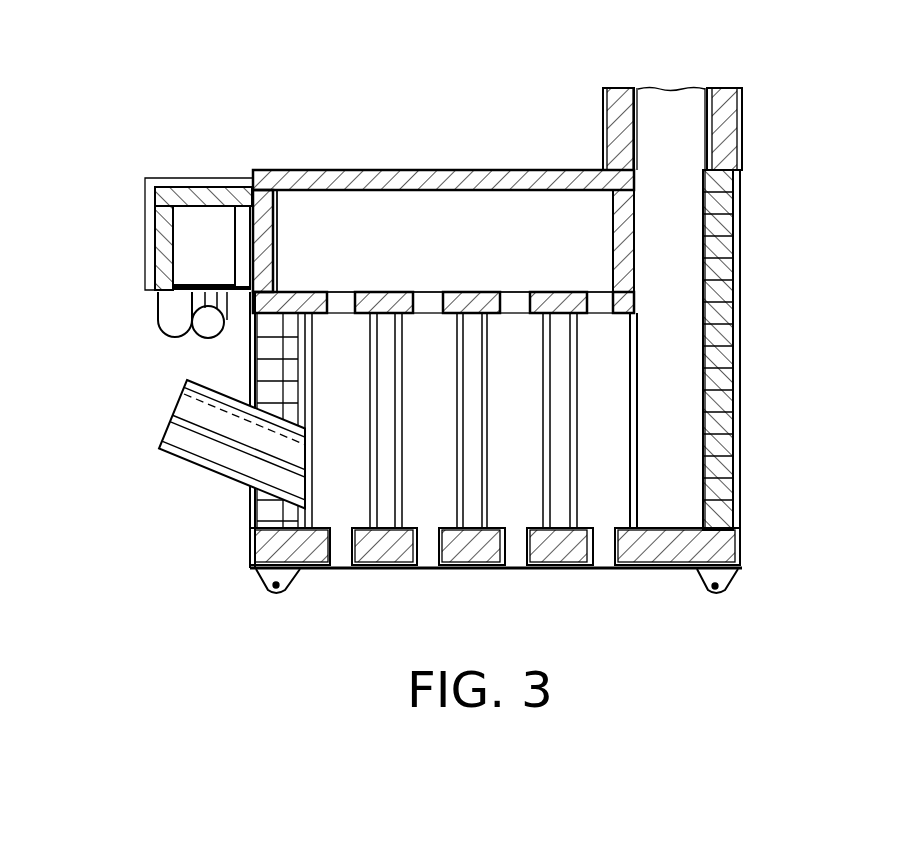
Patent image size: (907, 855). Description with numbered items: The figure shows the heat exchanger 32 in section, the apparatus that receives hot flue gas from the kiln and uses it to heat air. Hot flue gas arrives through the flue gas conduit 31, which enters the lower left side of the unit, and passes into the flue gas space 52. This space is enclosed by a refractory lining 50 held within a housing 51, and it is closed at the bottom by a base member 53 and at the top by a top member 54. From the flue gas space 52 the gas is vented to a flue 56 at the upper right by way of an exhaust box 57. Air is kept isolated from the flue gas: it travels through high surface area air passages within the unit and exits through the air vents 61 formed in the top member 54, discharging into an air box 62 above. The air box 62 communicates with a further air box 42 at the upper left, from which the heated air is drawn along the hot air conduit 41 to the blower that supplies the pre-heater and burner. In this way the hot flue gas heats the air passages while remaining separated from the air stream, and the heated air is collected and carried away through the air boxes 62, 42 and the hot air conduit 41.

The flue gas conduit 31 is at (188, 460).
The heat exchanger 32 is at (443, 119).
The hot air conduit 41 is at (168, 300).
The air box 42 is at (198, 227).
The refractory lining 50 is at (268, 347).
The housing 51 is at (742, 255).
The flue gas space 52 is at (388, 523).
The base member 53 is at (255, 568).
The top member 54 is at (432, 292).
The flue 56 is at (723, 132).
The exhaust box 57 is at (683, 457).
The air vents 61 is at (492, 293).
The air box 62 is at (397, 217).